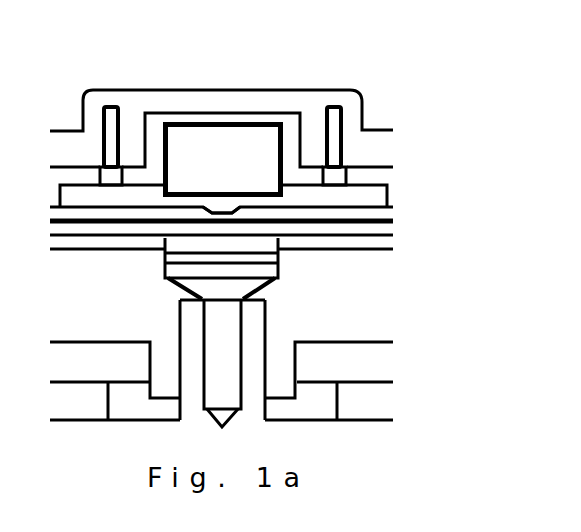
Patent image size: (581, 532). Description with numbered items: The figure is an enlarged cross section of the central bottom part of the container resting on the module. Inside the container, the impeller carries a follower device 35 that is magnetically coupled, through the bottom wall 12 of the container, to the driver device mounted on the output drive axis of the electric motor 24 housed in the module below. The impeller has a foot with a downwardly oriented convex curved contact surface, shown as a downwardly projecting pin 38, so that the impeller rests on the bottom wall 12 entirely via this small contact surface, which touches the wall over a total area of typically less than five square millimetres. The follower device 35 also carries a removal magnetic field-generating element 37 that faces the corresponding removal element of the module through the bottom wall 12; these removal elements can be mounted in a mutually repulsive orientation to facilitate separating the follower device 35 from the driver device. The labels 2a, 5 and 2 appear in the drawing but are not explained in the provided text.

The upper housing part 2a is at (196, 111).
The follower device 35 is at (382, 142).
The removal magnetic field-generating element 37 is at (245, 152).
The downwardly projecting pin 38 is at (218, 208).
The bottom wall 12 is at (50, 222).
The wall 5 is at (196, 363).
The electric motor 24 is at (98, 443).
The housing 2 is at (196, 402).